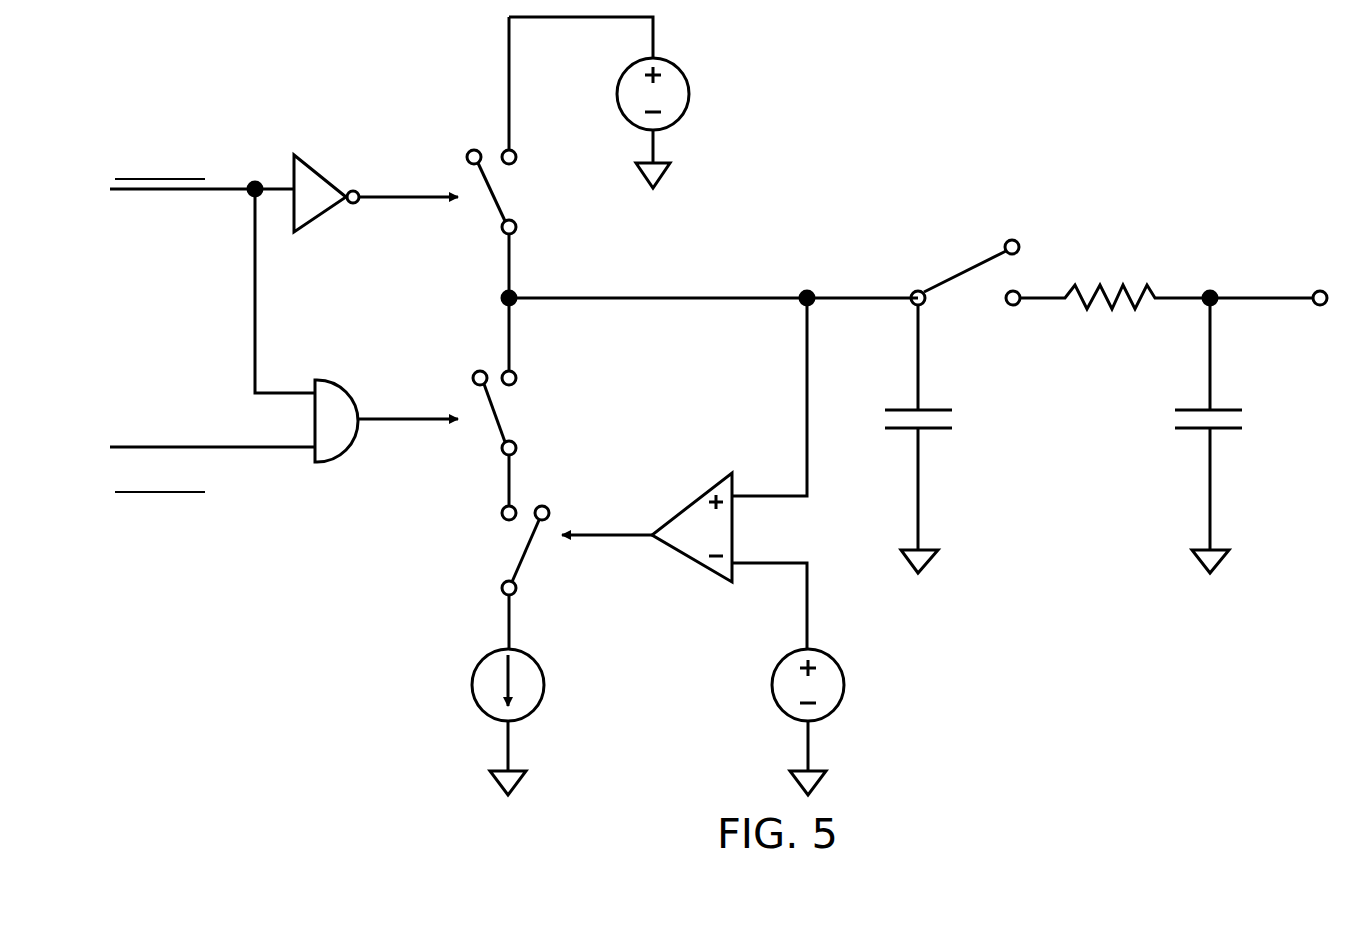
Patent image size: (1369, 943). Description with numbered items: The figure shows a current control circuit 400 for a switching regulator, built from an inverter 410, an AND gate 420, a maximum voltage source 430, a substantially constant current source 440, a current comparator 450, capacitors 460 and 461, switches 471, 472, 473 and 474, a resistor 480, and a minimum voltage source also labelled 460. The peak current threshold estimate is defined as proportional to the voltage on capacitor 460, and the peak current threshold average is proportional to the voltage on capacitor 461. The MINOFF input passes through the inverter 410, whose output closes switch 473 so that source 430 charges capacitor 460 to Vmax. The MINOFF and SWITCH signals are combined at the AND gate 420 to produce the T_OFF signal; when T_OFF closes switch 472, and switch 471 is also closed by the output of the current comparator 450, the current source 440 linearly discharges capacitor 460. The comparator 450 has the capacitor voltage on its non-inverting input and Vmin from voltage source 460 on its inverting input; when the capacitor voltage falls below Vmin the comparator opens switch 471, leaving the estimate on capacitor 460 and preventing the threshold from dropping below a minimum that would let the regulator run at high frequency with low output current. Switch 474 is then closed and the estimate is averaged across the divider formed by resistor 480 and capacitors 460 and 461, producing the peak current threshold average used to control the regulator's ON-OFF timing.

The current control circuit 400 is at (880, 140).
The inverter 410 is at (318, 172).
The AND gate 420 is at (340, 387).
The voltage source 430 is at (676, 66).
The substantially constant current source 440 is at (533, 660).
The current comparator 450 is at (728, 472).
The capacitor / voltage source 460 is at (833, 660).
The capacitor 461 is at (1226, 408).
The switch 471 is at (525, 553).
The switch 472 is at (497, 418).
The switch 473 is at (495, 200).
The switch 474 is at (950, 279).
The resistor 480 is at (1100, 283).